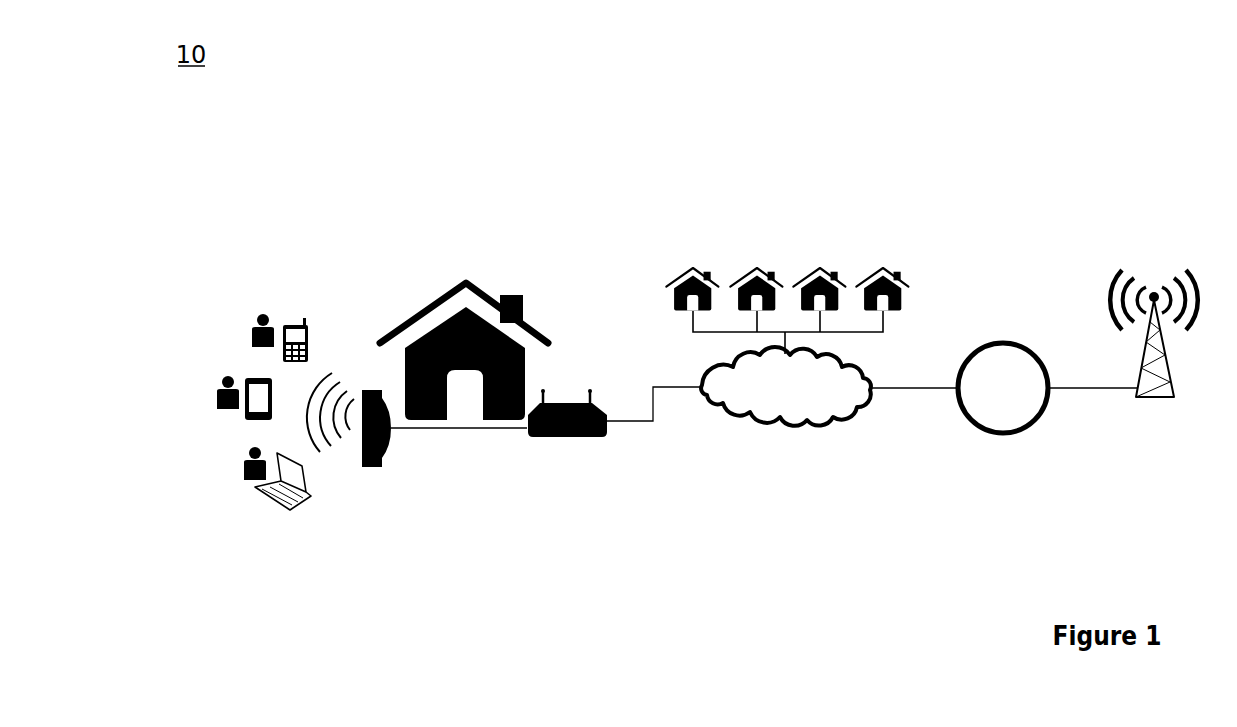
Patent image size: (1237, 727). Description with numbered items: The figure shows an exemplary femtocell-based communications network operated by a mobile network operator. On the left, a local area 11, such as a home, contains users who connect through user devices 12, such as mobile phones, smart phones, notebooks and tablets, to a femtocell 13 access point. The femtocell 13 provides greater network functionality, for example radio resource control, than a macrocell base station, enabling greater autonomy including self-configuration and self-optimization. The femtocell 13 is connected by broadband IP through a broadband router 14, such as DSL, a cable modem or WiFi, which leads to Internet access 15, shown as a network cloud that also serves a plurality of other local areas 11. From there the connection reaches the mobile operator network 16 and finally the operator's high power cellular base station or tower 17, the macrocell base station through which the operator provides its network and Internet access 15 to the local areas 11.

The local area 11 is at (458, 283).
The user device 12 is at (200, 323).
The femtocell 13 is at (373, 467).
The broadband router 14 is at (577, 443).
The Internet access 15 is at (828, 386).
The mobile operator network 16 is at (1048, 388).
The high power cellular base station 17 is at (1167, 410).